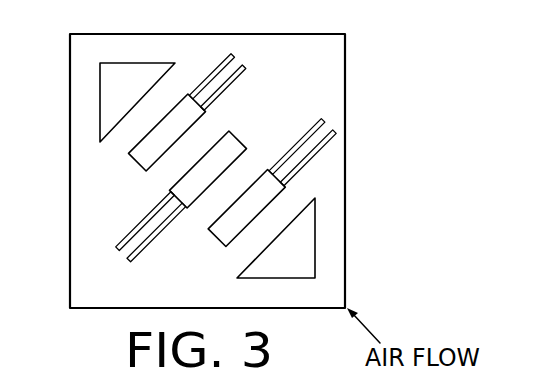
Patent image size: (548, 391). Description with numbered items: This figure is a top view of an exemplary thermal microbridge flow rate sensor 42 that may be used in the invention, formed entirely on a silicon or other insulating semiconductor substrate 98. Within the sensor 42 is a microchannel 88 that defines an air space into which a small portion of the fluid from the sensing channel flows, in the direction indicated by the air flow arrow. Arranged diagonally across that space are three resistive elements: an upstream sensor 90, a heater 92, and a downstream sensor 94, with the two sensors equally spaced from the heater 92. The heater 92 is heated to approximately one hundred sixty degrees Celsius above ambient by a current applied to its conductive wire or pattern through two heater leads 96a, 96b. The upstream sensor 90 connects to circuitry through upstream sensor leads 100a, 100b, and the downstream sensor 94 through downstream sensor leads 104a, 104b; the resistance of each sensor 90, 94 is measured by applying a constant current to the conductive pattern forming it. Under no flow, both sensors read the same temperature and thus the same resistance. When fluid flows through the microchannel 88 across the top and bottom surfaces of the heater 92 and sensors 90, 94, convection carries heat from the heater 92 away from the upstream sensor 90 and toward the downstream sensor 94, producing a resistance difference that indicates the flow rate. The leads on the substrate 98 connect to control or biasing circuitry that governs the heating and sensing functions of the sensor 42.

The flow rate sensor 42 is at (305, 21).
The substrate 98 is at (328, 59).
The microchannel 88 is at (138, 95).
The upstream sensor 90 is at (215, 240).
The heater 92 is at (234, 136).
The downstream sensor 94 is at (137, 162).
The heater lead 96a is at (147, 215).
The heater lead 96b is at (134, 261).
The upstream sensor lead 100a is at (317, 122).
The upstream sensor lead 100b is at (326, 145).
The downstream sensor lead 104a is at (223, 61).
The downstream sensor lead 104b is at (243, 71).